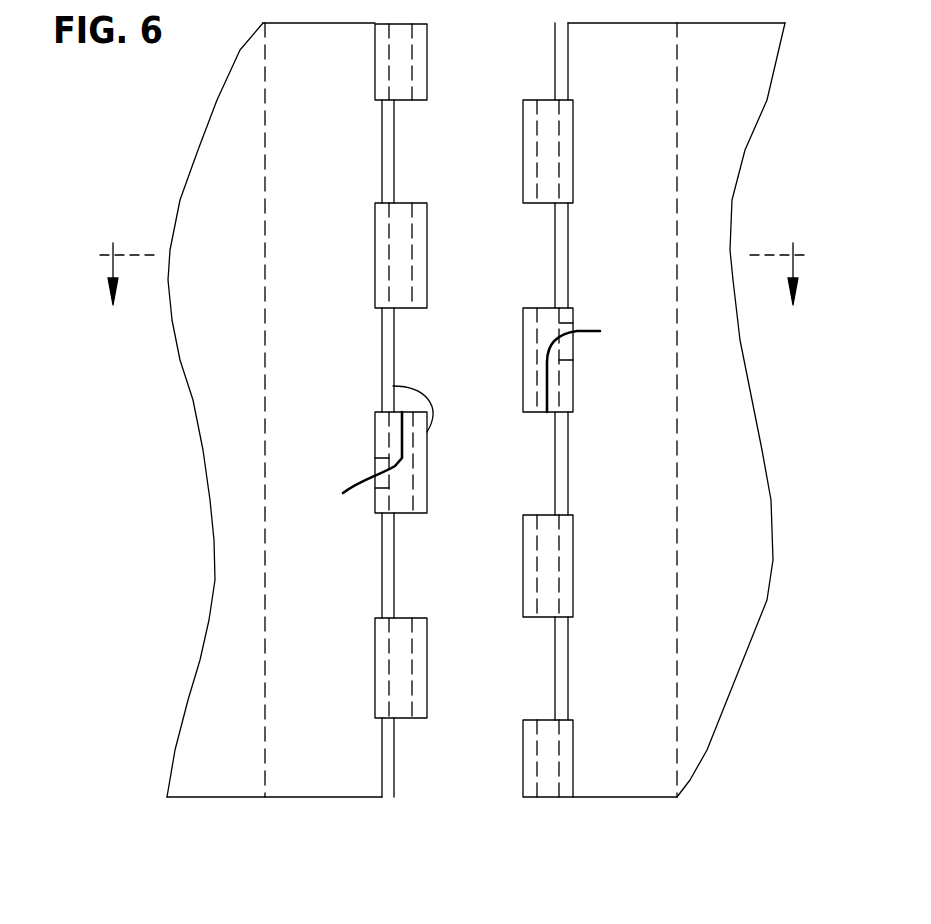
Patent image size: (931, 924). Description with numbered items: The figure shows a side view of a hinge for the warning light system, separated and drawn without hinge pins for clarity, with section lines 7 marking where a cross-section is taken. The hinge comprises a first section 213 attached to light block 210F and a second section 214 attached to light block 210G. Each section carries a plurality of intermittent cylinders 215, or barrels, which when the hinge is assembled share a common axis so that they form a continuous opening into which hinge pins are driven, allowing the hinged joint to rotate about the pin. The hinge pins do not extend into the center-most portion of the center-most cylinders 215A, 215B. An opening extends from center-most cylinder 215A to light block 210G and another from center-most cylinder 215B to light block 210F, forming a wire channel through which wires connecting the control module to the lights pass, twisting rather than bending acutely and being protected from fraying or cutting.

The section line 7- 7 is at (452, 251).
The light block 210F is at (218, 797).
The light block 210G is at (615, 797).
The first section 213 is at (394, 752).
The second section 214 is at (556, 663).
The cylinders 215 is at (427, 59).
The center-most cylinder 215A is at (523, 352).
The center-most cylinder 215B is at (428, 460).